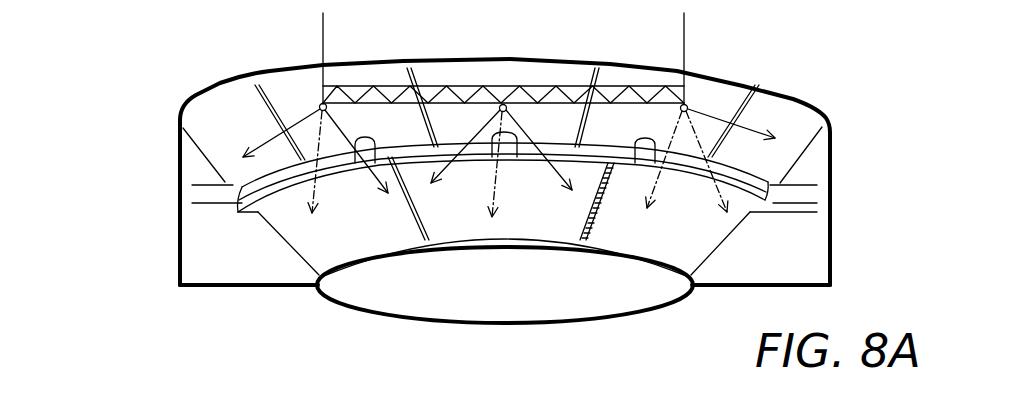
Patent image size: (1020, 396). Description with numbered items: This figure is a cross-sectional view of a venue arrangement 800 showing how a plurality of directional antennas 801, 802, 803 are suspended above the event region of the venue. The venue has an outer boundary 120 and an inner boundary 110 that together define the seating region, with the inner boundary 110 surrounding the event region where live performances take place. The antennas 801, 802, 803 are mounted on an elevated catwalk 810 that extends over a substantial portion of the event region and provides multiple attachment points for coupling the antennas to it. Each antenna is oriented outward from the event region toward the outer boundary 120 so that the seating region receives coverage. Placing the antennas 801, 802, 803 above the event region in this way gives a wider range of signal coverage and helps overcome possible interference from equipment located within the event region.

The lighting system / venue arrangement 800 is at (123, 77).
The directional antenna 801 is at (320, 104).
The directional antenna 802 is at (505, 112).
The directional antenna 803 is at (687, 106).
The truss 810 is at (453, 83).
The outer boundary 120 is at (830, 220).
The inner boundary 110 is at (455, 253).